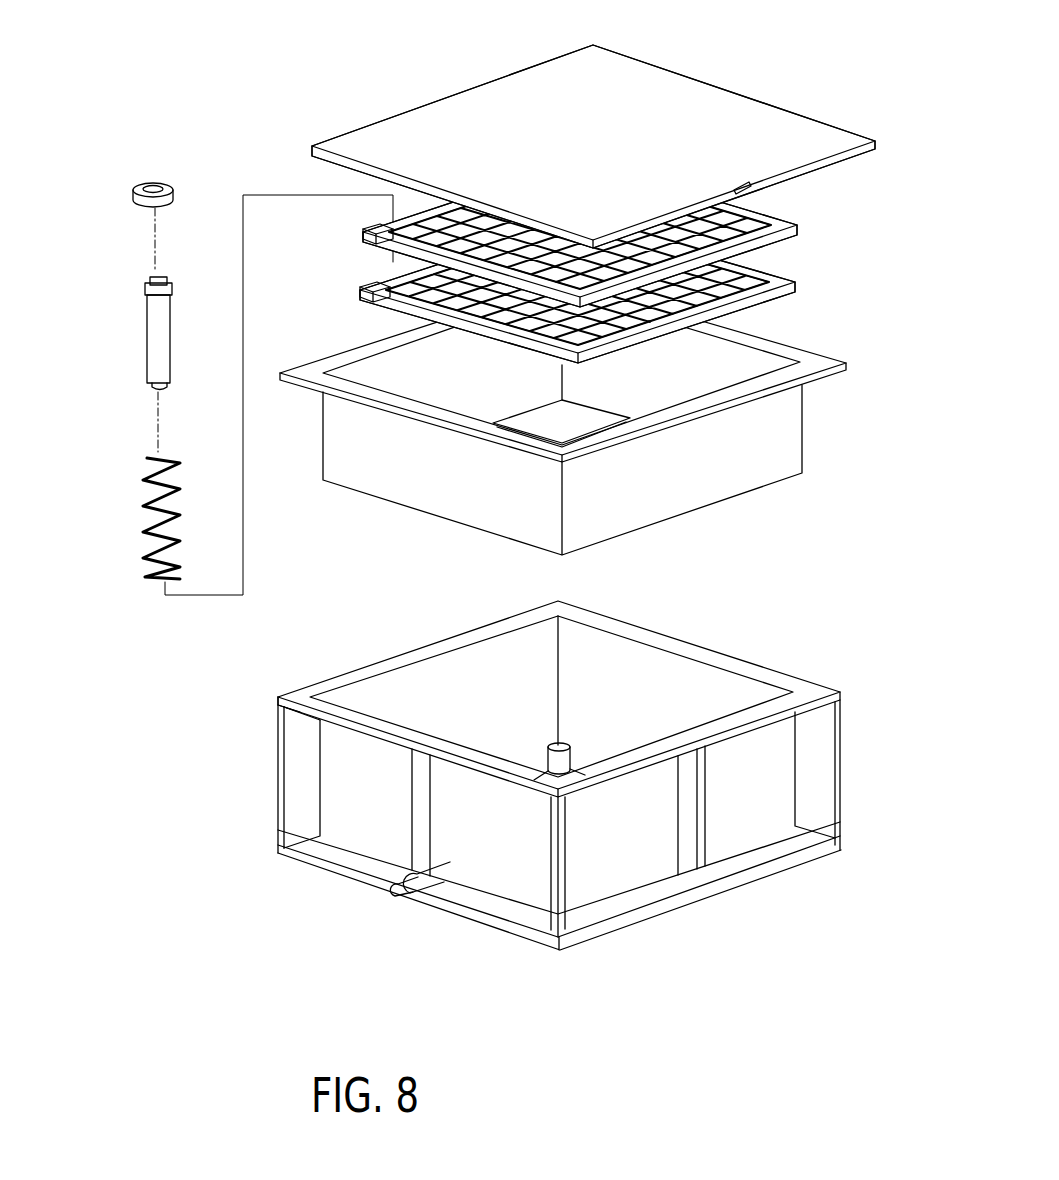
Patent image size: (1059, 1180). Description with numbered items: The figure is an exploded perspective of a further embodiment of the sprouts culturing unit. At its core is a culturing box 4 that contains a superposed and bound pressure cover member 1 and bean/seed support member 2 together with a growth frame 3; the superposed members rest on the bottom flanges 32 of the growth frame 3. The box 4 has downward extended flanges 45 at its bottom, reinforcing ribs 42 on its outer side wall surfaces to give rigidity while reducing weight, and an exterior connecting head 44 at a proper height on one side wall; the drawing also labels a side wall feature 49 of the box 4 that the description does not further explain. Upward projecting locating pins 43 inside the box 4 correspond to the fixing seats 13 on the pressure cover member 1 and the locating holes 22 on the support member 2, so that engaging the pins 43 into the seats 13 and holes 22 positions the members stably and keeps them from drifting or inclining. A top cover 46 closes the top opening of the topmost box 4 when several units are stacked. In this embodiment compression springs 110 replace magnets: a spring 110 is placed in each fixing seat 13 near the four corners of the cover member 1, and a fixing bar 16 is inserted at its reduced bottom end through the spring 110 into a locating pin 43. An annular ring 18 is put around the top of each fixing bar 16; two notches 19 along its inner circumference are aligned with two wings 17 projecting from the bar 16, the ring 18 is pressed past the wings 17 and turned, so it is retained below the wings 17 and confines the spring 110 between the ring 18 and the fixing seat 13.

The top cover 46 is at (683, 88).
The pressure cover member 1 is at (800, 218).
The bean/seed support member 2 is at (805, 285).
The fixing seat 13 is at (367, 232).
The locating hole 22 is at (368, 287).
The growth frame 3 is at (372, 513).
The bottom flange 32 is at (545, 412).
The culturing box 4 is at (258, 793).
The reinforcing rib 42 is at (293, 722).
The locating pin 43 is at (560, 743).
The exterior connecting head 44 is at (390, 890).
The downward extended flange 45 is at (650, 915).
The window opening 49 is at (338, 820).
The annular ring 18 is at (135, 197).
The notch 19 is at (162, 186).
The wing 17 is at (145, 290).
The fixing bar 16 is at (158, 338).
The compression spring 110 is at (143, 512).